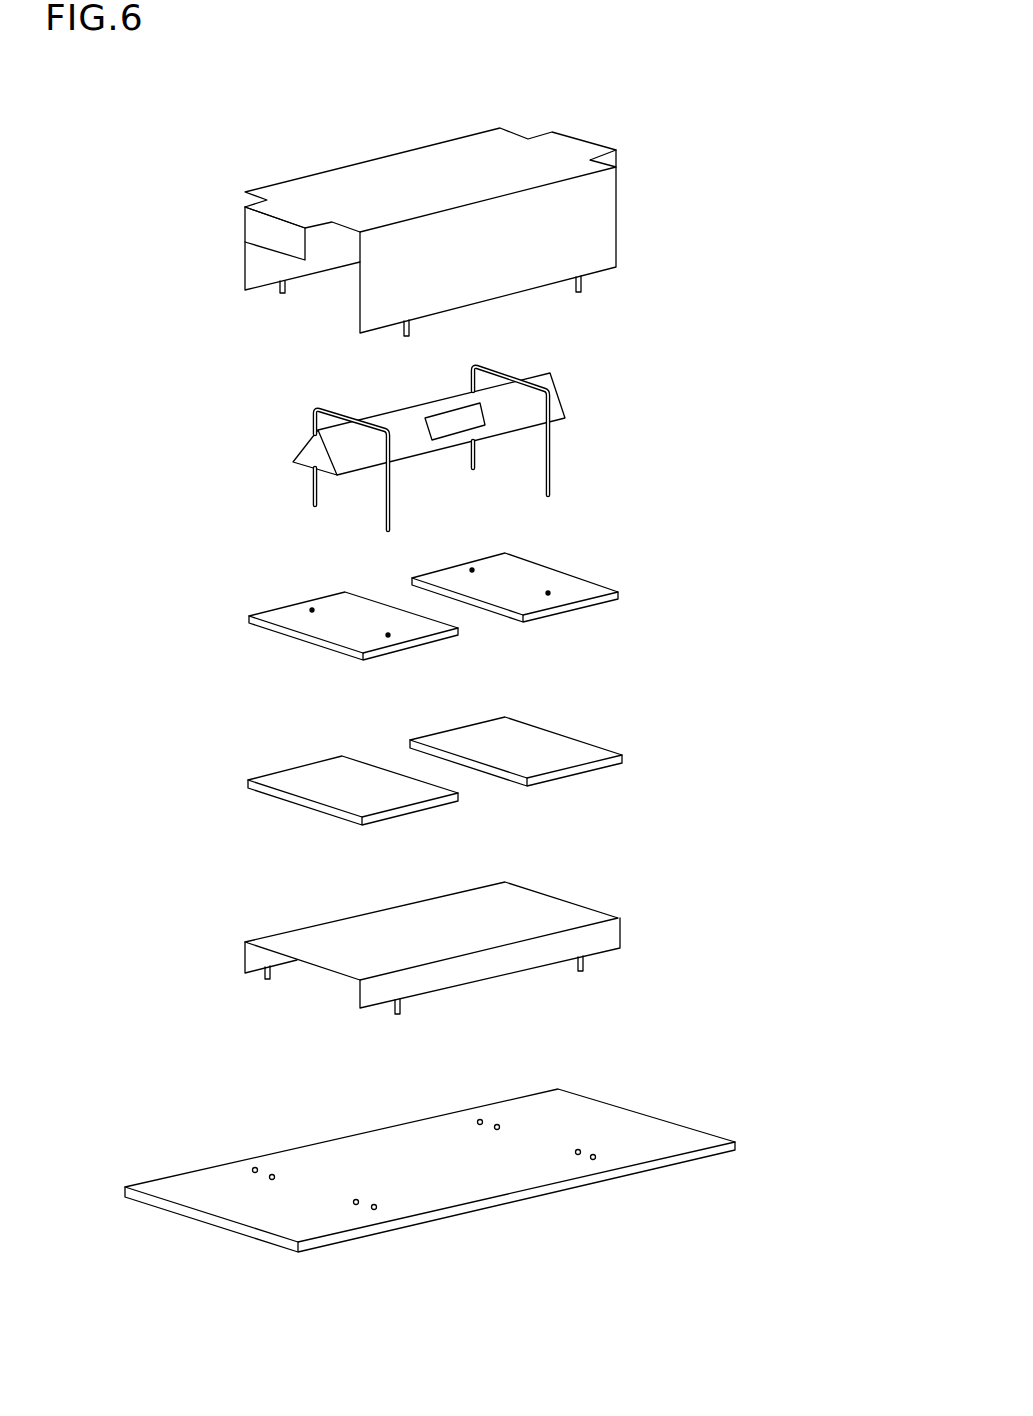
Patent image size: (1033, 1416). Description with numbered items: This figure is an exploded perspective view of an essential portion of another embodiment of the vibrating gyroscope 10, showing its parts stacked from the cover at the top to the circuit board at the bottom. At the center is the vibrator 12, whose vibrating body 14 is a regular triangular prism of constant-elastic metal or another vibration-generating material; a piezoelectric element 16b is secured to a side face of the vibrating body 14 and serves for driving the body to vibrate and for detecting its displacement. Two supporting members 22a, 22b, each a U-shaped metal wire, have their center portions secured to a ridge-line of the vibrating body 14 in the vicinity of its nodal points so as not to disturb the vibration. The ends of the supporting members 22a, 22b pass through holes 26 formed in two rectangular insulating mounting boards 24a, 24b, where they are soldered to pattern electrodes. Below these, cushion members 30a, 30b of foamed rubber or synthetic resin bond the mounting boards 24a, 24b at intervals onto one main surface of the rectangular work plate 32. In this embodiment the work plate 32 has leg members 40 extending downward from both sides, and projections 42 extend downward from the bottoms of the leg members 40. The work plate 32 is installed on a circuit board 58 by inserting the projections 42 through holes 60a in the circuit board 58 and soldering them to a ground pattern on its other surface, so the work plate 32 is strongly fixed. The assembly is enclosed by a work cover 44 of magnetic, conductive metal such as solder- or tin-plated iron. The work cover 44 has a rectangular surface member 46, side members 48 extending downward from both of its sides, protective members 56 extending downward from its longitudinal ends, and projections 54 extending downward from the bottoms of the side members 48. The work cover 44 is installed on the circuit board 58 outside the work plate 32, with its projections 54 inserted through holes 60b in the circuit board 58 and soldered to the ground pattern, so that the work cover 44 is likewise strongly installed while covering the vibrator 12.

The vibrating gyroscope 10 is at (633, 54).
The vibrator 12 is at (557, 377).
The vibrating body 14 is at (558, 412).
The piezoelectric element 16b is at (442, 422).
The supporting member 22a is at (390, 508).
The supporting member 22b is at (552, 473).
The mounting board 24a is at (307, 625).
The mounting board 24b is at (532, 573).
The hole 26 is at (310, 608).
The cushion member 30a is at (307, 787).
The cushion member 30b is at (535, 740).
The work plate 32 is at (395, 925).
The leg member 40 is at (250, 957).
The projection 42 is at (265, 978).
The work cover 44 is at (423, 146).
The surface member 46 is at (335, 182).
The side member 48 is at (258, 265).
The projection 54 is at (282, 294).
The protective member 56 is at (262, 232).
The circuit board 58 is at (605, 1118).
The hole 60a is at (276, 1170).
The hole 60b is at (247, 1168).